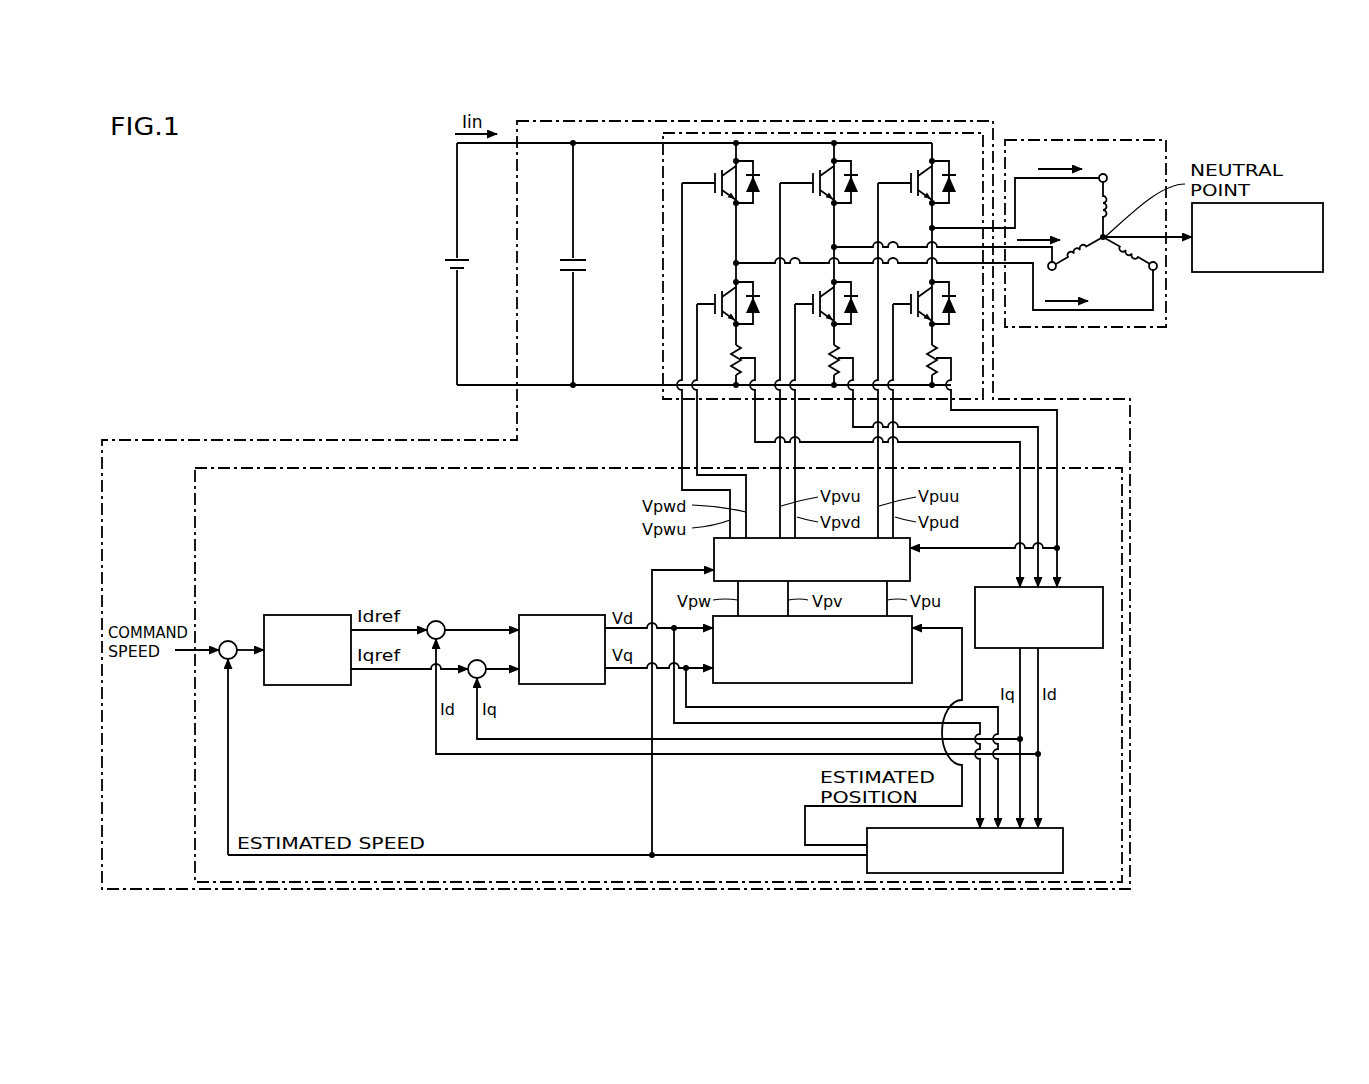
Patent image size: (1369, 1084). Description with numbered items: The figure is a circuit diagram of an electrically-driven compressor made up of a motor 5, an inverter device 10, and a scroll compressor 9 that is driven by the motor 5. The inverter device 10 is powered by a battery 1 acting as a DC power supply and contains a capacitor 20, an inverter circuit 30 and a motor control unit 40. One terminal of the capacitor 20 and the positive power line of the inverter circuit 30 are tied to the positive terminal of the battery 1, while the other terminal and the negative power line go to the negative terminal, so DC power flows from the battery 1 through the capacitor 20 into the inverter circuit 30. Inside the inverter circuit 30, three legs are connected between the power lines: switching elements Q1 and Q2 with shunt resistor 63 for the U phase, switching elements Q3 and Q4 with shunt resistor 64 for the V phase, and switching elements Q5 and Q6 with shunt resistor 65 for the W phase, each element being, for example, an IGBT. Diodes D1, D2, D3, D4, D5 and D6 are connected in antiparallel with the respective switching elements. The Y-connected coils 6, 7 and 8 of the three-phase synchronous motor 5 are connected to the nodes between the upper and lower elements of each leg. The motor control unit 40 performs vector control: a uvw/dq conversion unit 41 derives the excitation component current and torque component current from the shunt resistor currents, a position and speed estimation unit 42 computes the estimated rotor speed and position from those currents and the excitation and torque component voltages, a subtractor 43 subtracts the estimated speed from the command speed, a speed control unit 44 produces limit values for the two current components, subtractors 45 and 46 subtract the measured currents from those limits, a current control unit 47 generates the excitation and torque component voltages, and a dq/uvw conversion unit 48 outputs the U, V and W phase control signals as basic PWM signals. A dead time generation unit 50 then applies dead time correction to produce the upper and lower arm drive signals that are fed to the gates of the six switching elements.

The battery 1 is at (464, 258).
The capacitor 20 is at (580, 272).
The inverter circuit 30 is at (985, 377).
The inverter device 10 is at (1098, 398).
The motor control unit 40 is at (1097, 466).
The motor 5 is at (1140, 137).
The coil 6 is at (1108, 208).
The coil 7 is at (1081, 244).
The coil 8 is at (1125, 262).
The scroll compressor 9 is at (1290, 272).
The uvw/dq conversion unit 41 is at (1068, 588).
The position and speed estimation unit 42 is at (1063, 850).
The subtractor 43 is at (234, 644).
The speed control unit 44 is at (306, 615).
The subtractor 45 is at (441, 621).
The subtractor 46 is at (481, 661).
The current control unit 47 is at (558, 615).
The dq/uvw conversion unit 48 is at (855, 683).
The dead time generation unit 50 is at (714, 558).
The shunt resistor 63 is at (918, 351).
The shunt resistor 64 is at (820, 351).
The shunt resistor 65 is at (722, 351).
The switching element Q1 is at (906, 178).
The switching element Q2 is at (909, 299).
The switching element Q3 is at (808, 178).
The switching element Q4 is at (811, 299).
The switching element Q5 is at (710, 178).
The switching element Q6 is at (713, 299).
The diode D1 is at (951, 194).
The diode D2 is at (951, 315).
The diode D3 is at (853, 194).
The diode D4 is at (853, 315).
The diode D5 is at (755, 194).
The diode D6 is at (755, 315).